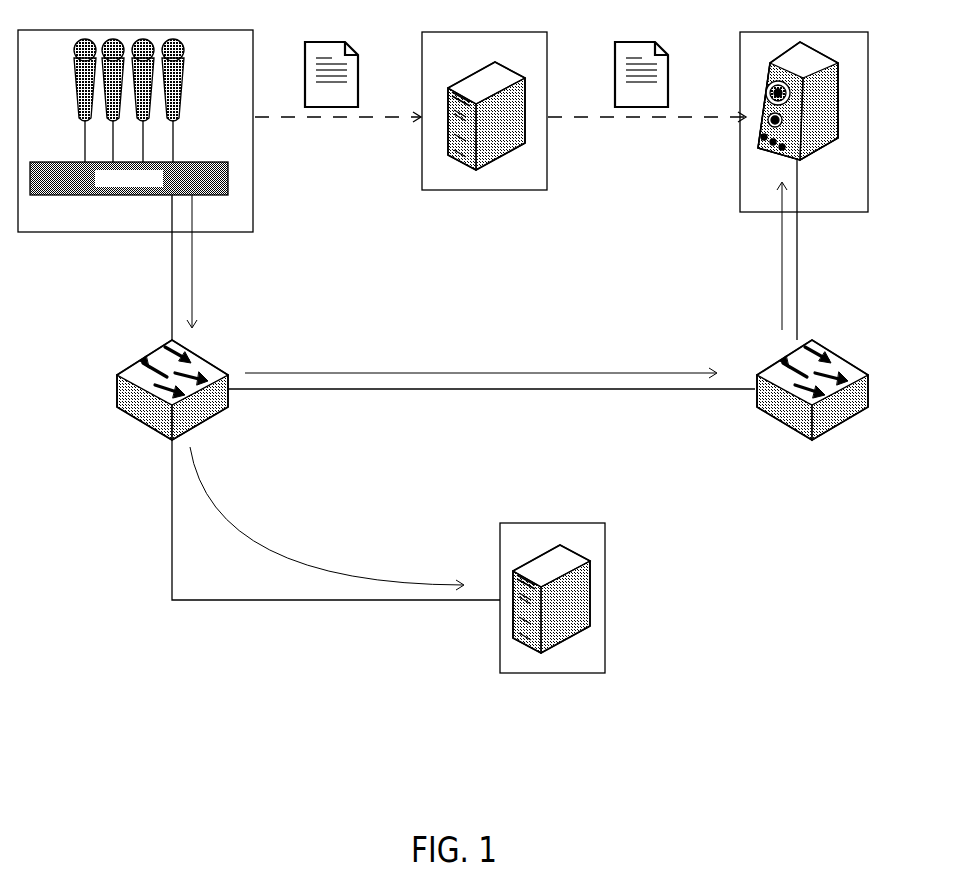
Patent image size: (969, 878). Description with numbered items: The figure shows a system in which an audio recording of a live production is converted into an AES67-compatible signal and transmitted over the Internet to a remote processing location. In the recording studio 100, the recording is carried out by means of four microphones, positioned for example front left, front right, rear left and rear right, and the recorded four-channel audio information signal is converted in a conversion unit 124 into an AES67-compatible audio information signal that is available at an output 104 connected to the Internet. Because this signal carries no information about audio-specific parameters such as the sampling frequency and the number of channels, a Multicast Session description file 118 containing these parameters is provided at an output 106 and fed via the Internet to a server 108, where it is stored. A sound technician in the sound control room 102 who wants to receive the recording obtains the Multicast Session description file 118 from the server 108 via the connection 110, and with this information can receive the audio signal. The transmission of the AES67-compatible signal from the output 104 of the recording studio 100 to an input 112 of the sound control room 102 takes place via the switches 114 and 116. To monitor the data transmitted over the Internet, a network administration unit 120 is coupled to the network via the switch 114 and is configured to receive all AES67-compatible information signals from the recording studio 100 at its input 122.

The recording studio 100 is at (135, 125).
The sound control room 102 is at (804, 115).
The output 104 is at (167, 267).
The output 106 is at (338, 123).
The server 108 is at (484, 104).
The connection 110 is at (647, 123).
The input 112 is at (801, 250).
The switch 114 is at (433, 390).
The switch 116 is at (810, 390).
The Multicast Session description file 118 is at (486, 66).
The network administration unit 120 is at (552, 591).
The input 122 is at (336, 529).
The conversion unit 124 is at (129, 171).